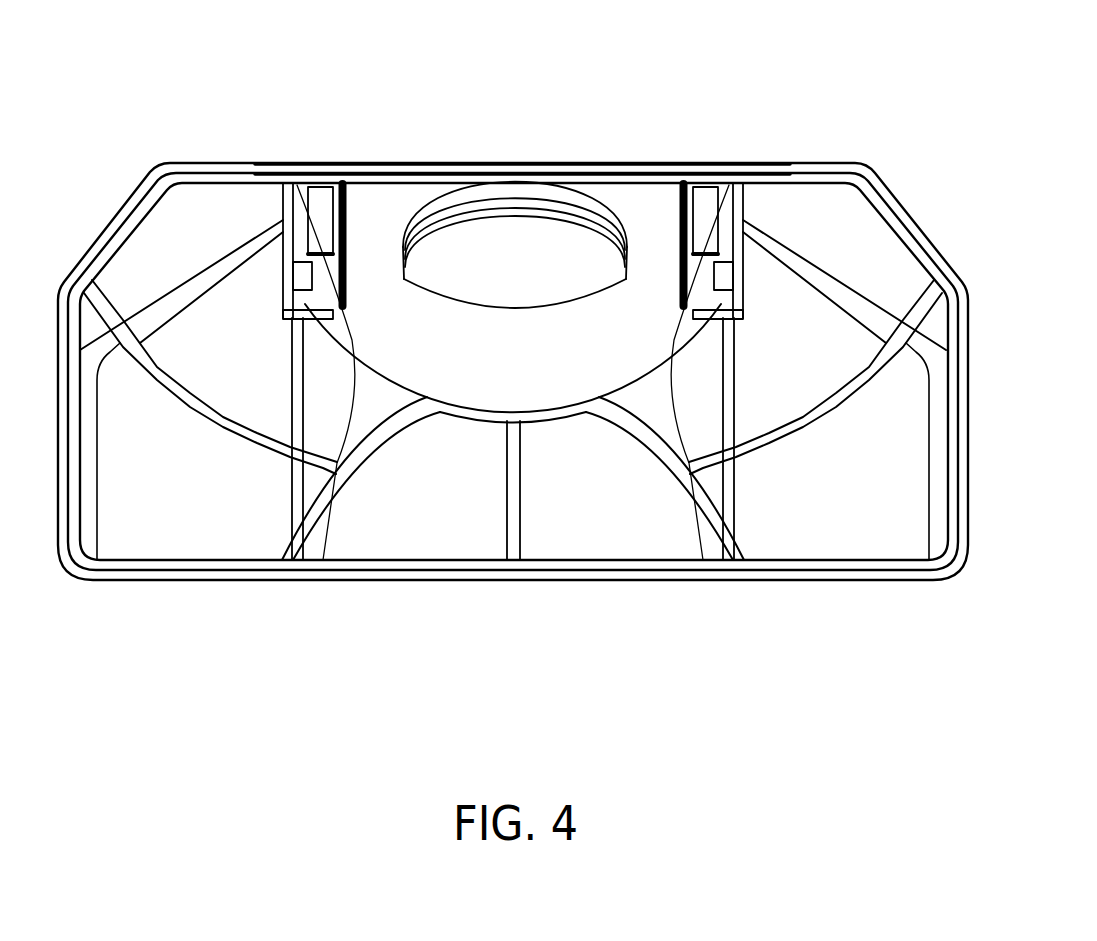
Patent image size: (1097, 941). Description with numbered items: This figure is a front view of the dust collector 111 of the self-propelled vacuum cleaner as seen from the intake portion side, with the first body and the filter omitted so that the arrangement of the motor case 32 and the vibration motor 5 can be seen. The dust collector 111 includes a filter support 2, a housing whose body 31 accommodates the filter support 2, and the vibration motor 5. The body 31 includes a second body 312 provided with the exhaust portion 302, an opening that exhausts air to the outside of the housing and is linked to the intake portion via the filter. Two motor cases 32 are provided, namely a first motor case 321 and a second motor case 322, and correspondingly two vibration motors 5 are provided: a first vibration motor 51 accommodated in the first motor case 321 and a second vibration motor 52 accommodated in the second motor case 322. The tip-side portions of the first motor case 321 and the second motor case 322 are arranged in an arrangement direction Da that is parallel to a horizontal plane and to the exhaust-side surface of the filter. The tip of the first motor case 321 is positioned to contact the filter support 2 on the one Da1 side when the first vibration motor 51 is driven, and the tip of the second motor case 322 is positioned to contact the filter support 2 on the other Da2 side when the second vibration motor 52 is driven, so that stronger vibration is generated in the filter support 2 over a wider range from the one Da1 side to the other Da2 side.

The dust collector 111 is at (152, 142).
The vibration motor 5 is at (513, 280).
The first vibration motor 51 is at (322, 197).
The second vibration motor 52 is at (695, 312).
The filter support 2 is at (337, 300).
The exhaust portion 302 is at (513, 270).
The body 31 is at (513, 323).
The second body 312 is at (813, 170).
The motor case 32 is at (513, 492).
The first motor case 321 is at (303, 303).
The second motor case 322 is at (723, 303).
The arrangement direction Da is at (586, 323).
The one side in the arrangement direction Da1 is at (400, 323).
The other side in the arrangement direction Da2 is at (625, 323).